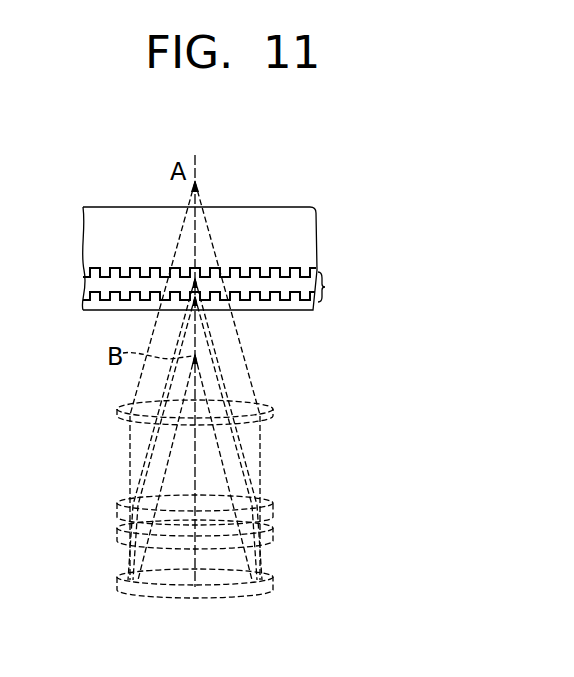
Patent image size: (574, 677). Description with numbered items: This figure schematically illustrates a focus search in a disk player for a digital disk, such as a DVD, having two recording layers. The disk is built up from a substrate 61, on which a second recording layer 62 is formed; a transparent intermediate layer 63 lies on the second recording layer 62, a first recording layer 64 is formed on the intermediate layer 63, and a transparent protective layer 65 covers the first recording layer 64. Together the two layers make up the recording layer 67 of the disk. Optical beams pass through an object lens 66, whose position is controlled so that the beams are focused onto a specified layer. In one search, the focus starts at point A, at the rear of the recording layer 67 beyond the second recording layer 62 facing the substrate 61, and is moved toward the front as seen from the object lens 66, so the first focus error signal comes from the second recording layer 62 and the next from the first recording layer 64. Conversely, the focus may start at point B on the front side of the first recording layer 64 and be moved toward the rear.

The substrate 61 is at (270, 213).
The second recording layer 62 is at (262, 271).
The intermediate layer 63 is at (277, 287).
The first recording layer 64 is at (267, 297).
The protective layer 65 is at (247, 312).
The object lens 66 is at (243, 432).
The recording layer 67 is at (336, 287).